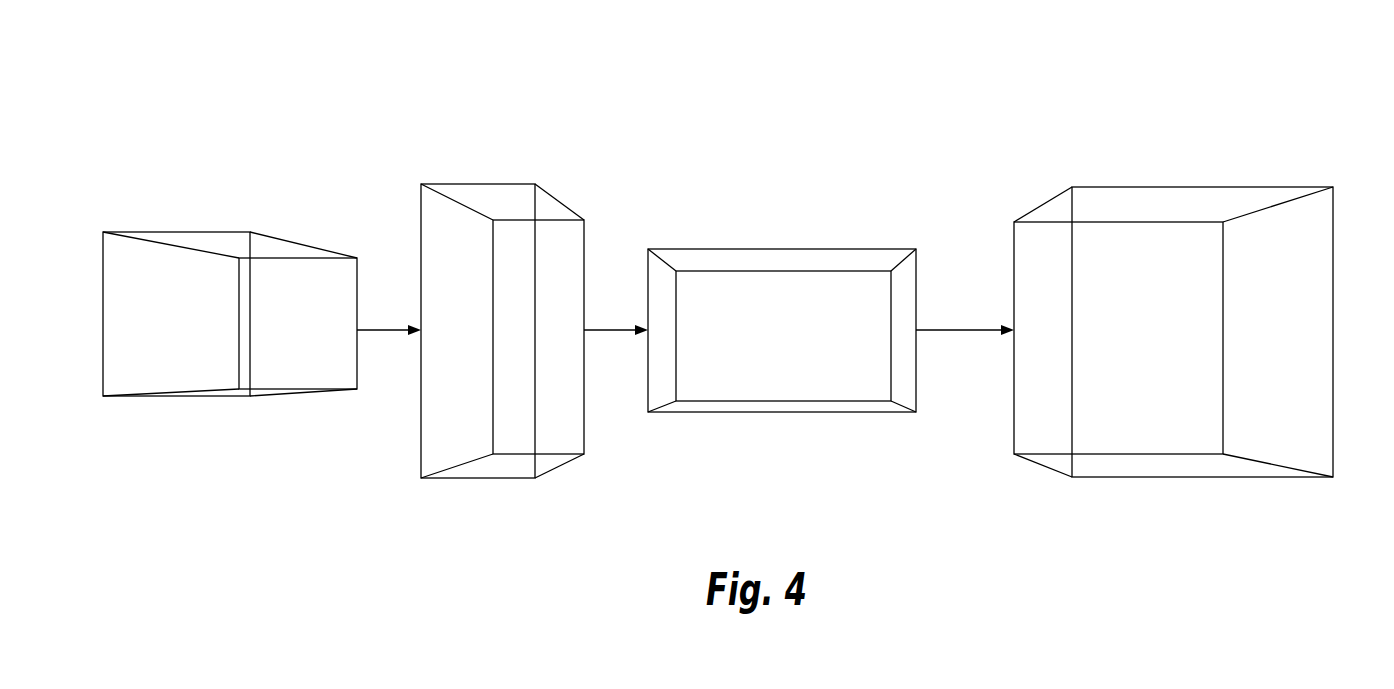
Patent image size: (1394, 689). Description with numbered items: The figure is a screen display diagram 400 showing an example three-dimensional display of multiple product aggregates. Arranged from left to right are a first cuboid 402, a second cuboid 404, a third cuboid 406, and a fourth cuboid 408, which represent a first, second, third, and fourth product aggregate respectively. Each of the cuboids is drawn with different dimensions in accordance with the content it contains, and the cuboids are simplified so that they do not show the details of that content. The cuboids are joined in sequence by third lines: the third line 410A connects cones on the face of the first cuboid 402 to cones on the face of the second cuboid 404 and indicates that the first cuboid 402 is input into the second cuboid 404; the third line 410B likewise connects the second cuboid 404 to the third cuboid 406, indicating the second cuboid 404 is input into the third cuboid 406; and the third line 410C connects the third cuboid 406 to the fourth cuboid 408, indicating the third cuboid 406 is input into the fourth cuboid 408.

The screen display diagram 400 is at (1316, 80).
The first cuboid 402 is at (176, 360).
The second cuboid 404 is at (477, 417).
The third cuboid 406 is at (745, 385).
The fourth cuboid 408 is at (1128, 417).
The third line 410A is at (397, 328).
The third line 410B is at (599, 328).
The third line 410C is at (967, 328).